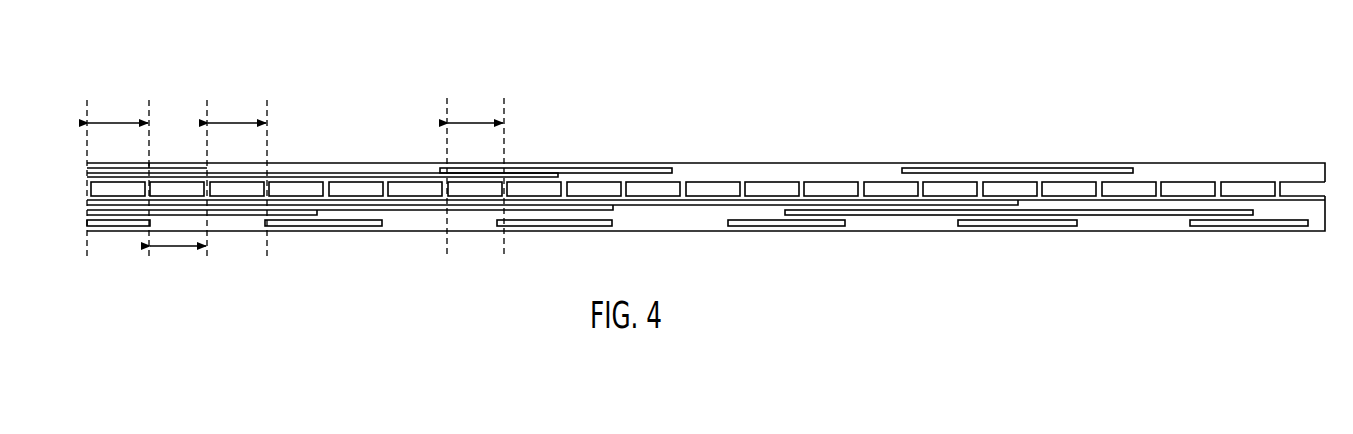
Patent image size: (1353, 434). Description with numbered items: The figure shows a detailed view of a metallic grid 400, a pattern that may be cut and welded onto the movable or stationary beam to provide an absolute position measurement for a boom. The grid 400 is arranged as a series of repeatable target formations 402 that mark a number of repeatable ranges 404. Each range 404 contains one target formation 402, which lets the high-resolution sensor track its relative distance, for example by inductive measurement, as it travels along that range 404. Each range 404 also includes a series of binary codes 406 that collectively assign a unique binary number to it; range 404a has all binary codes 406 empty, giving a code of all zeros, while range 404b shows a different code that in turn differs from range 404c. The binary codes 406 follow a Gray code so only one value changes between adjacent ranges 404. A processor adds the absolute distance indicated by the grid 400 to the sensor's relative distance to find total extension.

The metallic grid 400 is at (676, 67).
The target formation 402 is at (268, 191).
The range 404 is at (475, 122).
The range 404a is at (130, 121).
The range 404b is at (175, 247).
The range 404c is at (235, 121).
The binary code 406 is at (660, 167).